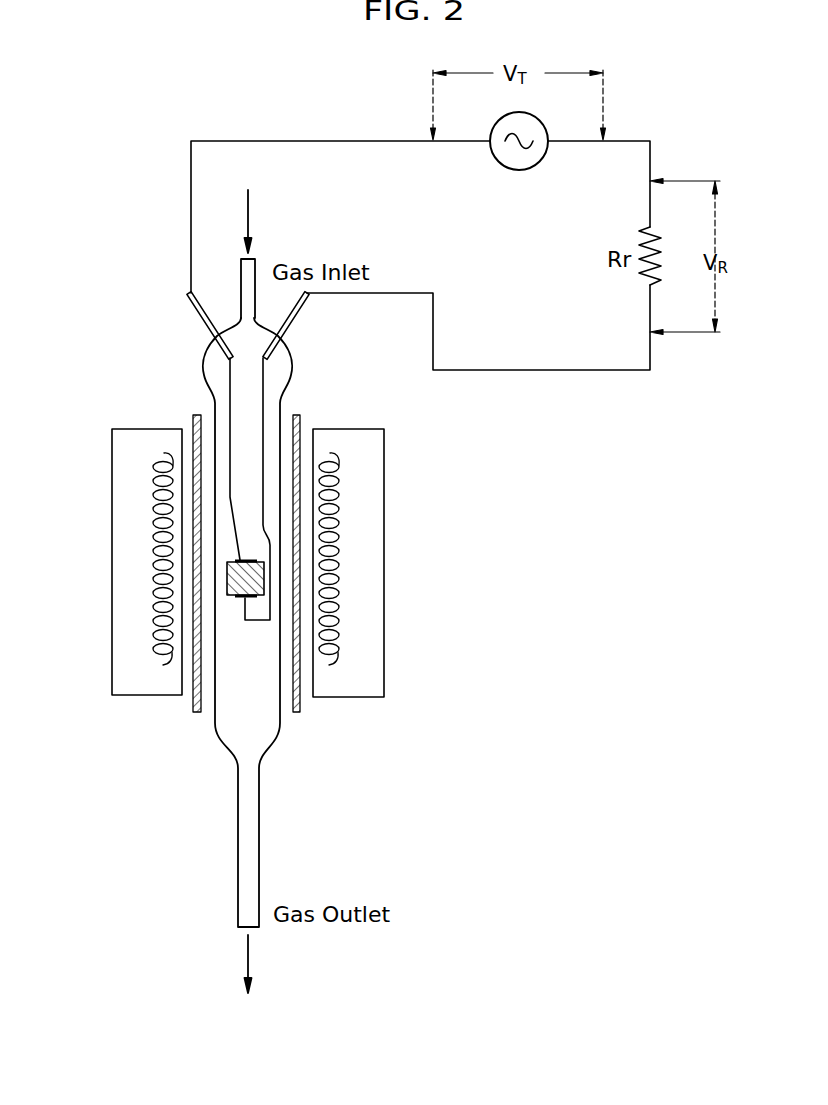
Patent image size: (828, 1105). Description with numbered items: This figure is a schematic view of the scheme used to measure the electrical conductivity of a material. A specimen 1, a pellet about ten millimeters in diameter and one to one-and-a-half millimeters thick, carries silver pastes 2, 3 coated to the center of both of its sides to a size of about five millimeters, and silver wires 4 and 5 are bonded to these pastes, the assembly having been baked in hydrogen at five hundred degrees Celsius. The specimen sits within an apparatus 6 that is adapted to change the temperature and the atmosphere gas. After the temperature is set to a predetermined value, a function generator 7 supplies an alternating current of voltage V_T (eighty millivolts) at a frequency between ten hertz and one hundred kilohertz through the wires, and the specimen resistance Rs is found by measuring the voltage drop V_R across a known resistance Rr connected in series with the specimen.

The specimen 1 is at (250, 580).
The silver paste 2 is at (245, 597).
The silver paste 3 is at (240, 560).
The silver wire 4 is at (263, 405).
The silver wire 5 is at (215, 403).
The apparatus 6 is at (198, 348).
The function generator 7 is at (542, 118).